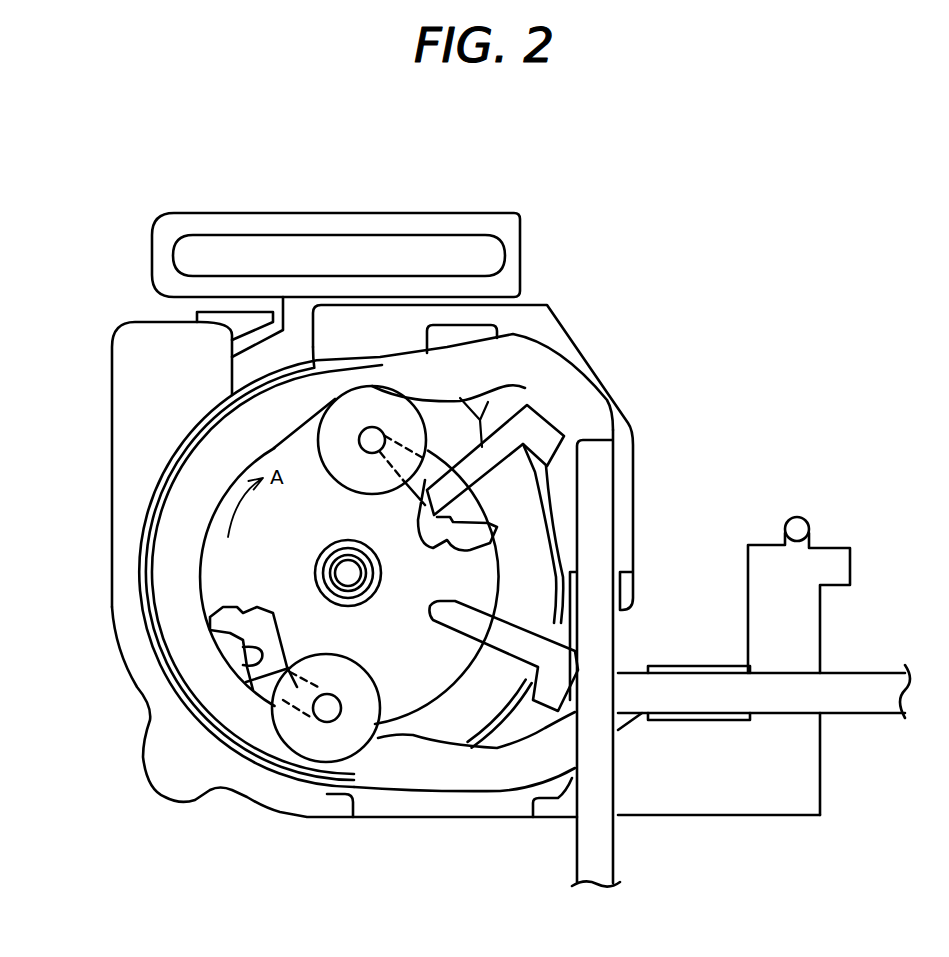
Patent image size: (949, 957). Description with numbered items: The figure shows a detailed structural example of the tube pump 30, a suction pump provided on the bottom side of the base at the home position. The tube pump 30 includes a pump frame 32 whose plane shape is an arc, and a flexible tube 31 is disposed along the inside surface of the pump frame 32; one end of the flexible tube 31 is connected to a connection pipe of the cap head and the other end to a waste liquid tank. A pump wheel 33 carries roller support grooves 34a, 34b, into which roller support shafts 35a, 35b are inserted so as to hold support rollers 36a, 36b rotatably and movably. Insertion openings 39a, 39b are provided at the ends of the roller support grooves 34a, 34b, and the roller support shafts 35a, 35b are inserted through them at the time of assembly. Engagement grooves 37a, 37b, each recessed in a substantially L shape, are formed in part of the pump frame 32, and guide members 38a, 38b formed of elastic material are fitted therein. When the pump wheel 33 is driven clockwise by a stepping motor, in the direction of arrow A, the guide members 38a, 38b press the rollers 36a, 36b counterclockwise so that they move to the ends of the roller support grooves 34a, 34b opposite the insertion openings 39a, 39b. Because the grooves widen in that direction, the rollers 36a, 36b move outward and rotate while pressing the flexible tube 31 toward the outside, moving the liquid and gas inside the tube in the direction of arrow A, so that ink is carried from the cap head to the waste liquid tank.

The tube pump 30 is at (609, 354).
The flexible tube 31 is at (866, 714).
The pump frame 32 is at (247, 802).
The pump wheel 33 is at (237, 485).
The roller support groove 34a is at (290, 676).
The roller support groove 34b is at (424, 450).
The roller support shaft 35a is at (333, 708).
The roller support shaft 35b is at (372, 437).
The support roller 36a is at (322, 752).
The support roller 36b is at (342, 405).
The engagement groove 37a is at (576, 438).
The engagement groove 37b is at (550, 678).
The guide member 38a is at (472, 457).
The guide member 38b is at (490, 647).
The insertion opening 39a is at (215, 612).
The insertion opening 39b is at (480, 533).